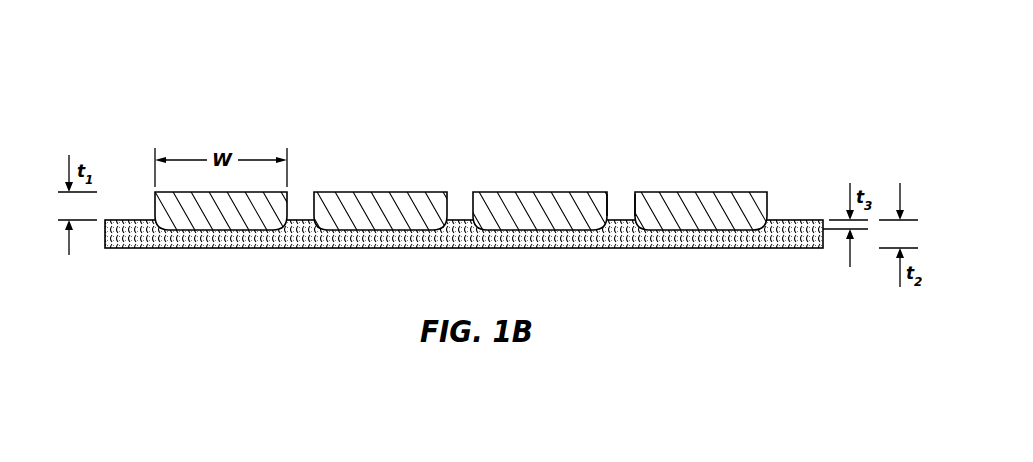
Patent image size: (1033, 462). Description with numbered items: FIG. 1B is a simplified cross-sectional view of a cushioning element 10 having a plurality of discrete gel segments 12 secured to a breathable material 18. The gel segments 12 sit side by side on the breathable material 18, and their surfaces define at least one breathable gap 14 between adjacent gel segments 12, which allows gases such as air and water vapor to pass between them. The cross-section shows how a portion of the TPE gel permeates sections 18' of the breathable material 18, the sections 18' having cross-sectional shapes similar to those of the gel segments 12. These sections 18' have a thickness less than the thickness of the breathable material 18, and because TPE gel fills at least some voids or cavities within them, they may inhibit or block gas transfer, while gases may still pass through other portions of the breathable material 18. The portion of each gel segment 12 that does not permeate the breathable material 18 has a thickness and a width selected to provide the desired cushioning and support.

The cushioning element 10 is at (448, 179).
The gel segments 12 is at (743, 204).
The breathable gap 14 is at (622, 186).
The breathable material 18 is at (464, 267).
The sections of the breathable material 18' is at (221, 253).